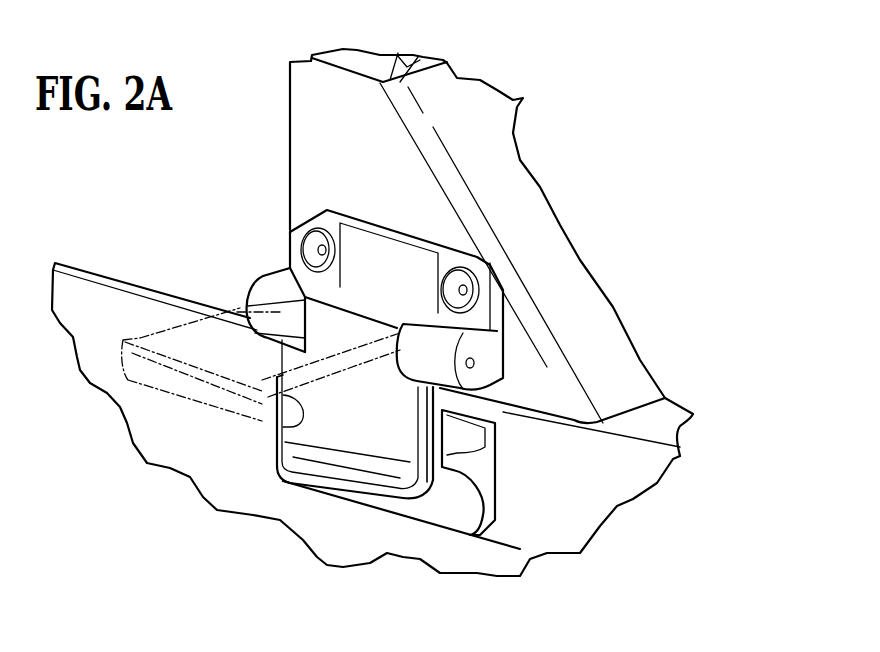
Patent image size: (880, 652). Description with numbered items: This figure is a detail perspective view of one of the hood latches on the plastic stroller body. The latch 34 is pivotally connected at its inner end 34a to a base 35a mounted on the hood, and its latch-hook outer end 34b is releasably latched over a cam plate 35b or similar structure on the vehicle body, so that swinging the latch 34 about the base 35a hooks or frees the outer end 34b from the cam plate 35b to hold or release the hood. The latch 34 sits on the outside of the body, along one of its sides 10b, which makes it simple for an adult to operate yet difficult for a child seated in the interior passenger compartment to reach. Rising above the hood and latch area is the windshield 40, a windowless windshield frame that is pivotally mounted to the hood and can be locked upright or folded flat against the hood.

The windshield 40 is at (515, 195).
The sides 10b is at (622, 459).
The base 35a is at (487, 347).
The cam plate 35b is at (460, 470).
The latch 34 is at (370, 417).
The inner end 34a is at (338, 320).
The latch-hook outer end 34b is at (452, 474).